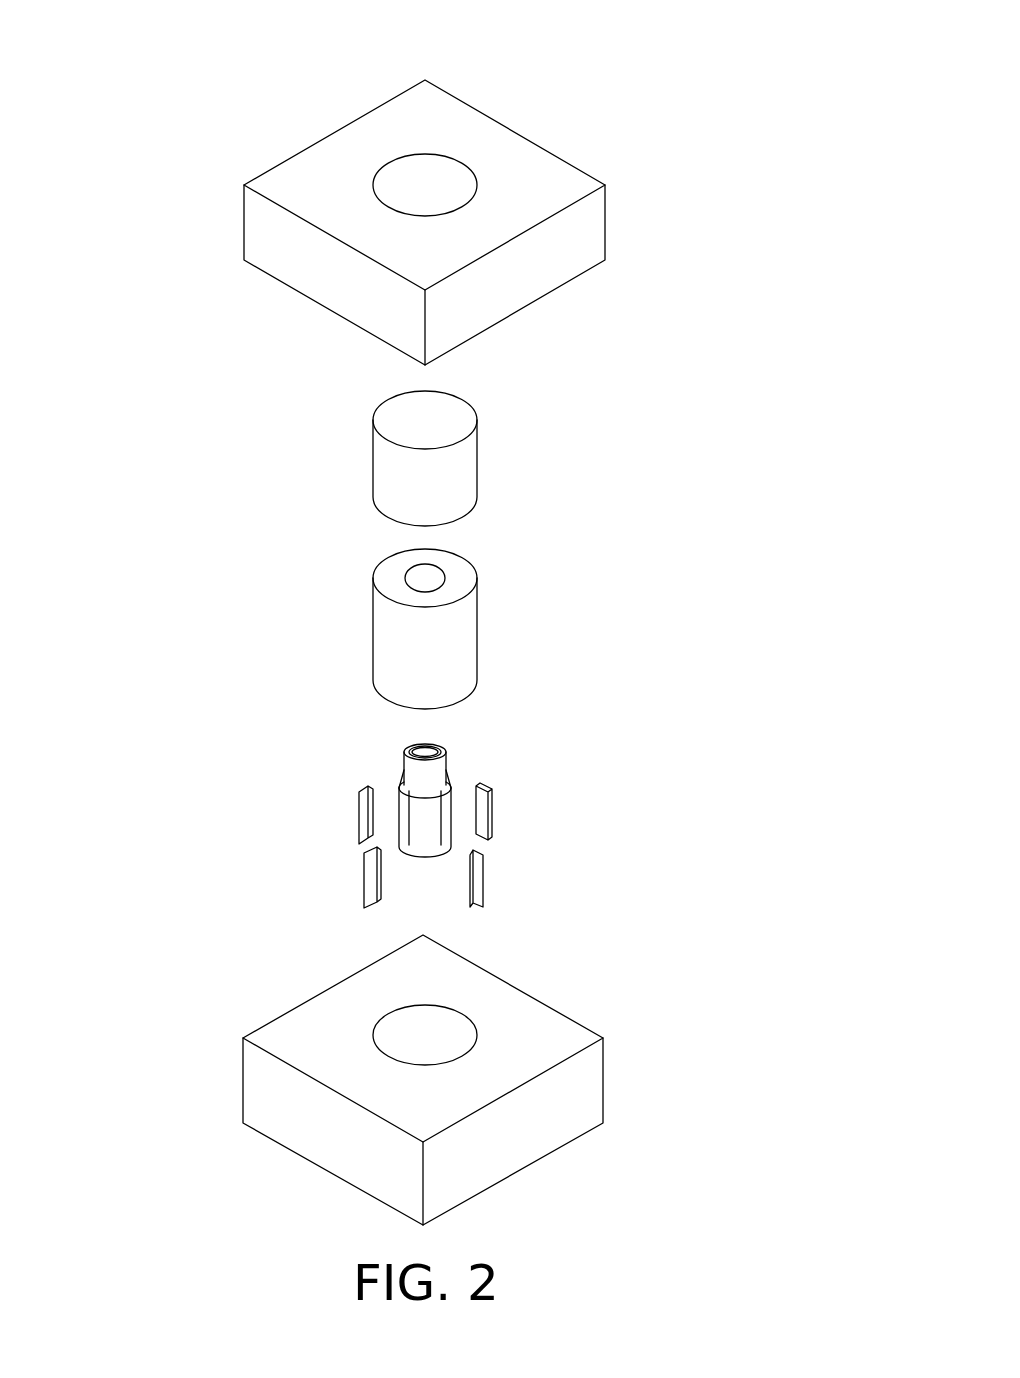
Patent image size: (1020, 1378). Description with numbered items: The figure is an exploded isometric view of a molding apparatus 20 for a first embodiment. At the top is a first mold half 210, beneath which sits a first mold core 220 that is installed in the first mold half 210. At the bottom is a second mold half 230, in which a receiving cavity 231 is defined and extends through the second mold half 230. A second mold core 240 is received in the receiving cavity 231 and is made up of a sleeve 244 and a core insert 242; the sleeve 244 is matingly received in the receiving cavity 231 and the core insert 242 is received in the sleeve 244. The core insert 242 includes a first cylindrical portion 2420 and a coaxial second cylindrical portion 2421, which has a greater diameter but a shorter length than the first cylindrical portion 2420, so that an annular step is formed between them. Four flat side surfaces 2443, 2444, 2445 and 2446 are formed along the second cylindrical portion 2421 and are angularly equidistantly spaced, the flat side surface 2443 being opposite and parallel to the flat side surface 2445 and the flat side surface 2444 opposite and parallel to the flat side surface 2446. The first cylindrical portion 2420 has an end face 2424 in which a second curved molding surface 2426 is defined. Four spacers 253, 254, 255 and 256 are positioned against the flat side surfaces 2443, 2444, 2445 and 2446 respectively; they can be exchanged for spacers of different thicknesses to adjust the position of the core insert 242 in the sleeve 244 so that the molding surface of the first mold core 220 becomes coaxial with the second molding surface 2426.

The molding apparatus 20 is at (423, 34).
The first mold half 210 is at (500, 175).
The first mold core 220 is at (447, 412).
The second mold half 230 is at (475, 1080).
The receiving cavity 231 is at (453, 1028).
The second mold core 240 is at (168, 620).
The core insert 242 is at (242, 672).
The sleeve 244 is at (395, 655).
The first cylindrical portion 2420 is at (425, 737).
The second cylindrical portion 2421 is at (428, 773).
The end face 2424 is at (433, 743).
The second curved molding surface 2426 is at (423, 812).
The flat side surface 2443 is at (410, 833).
The flat side surface 2444 is at (442, 830).
The flat side surface 2445 is at (450, 770).
The flat side surface 2446 is at (397, 773).
The spacer 253 is at (357, 890).
The spacer 254 is at (480, 890).
The spacer 255 is at (502, 827).
The spacer 256 is at (361, 800).